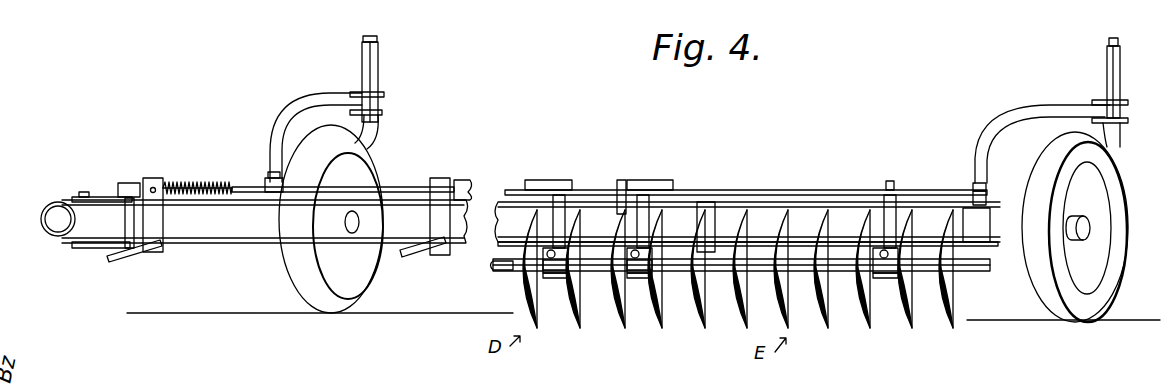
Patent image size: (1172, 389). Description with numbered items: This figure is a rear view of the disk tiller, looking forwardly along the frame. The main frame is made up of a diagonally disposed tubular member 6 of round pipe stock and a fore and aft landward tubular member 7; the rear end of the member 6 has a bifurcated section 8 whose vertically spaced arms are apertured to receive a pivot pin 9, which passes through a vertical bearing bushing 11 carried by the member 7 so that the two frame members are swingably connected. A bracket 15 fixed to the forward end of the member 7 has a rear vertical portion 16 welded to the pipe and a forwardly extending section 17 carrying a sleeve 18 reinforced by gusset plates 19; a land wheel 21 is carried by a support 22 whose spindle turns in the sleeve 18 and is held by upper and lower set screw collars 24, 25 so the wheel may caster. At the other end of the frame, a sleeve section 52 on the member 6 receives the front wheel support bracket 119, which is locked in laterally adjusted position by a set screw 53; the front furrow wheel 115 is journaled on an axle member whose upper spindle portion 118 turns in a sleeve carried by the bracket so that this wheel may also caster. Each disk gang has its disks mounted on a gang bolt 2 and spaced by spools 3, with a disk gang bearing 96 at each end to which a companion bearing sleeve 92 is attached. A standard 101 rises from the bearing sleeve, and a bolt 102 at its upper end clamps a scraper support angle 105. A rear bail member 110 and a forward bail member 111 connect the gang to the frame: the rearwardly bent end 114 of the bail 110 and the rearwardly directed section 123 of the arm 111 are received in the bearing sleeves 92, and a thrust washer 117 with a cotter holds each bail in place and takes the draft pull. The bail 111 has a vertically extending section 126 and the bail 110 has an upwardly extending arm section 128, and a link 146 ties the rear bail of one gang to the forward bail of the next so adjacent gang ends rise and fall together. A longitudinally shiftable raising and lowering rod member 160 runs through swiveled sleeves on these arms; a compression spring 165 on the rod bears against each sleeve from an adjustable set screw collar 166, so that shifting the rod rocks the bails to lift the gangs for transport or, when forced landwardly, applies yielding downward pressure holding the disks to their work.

The gang bolt 2 is at (492, 272).
The spools or spacers 3 is at (514, 271).
The diagonally disposed tubular member 6 is at (198, 243).
The fore and aft tubular member 7 is at (44, 212).
The bifurcated section 8 is at (98, 197).
The pivot pin 9 is at (84, 192).
The vertical bearing bushing 11 is at (75, 205).
The bracket 15 is at (278, 125).
The rear vertical portion 16 is at (266, 180).
The upper or forwardly extending section 17 is at (328, 93).
The sleeve 18 is at (378, 68).
The gusset plates 19 is at (384, 94).
The land wheel 21 is at (300, 275).
The support 22 is at (375, 140).
The upper set screw collar 24 is at (378, 44).
The lower set screw collar 25 is at (382, 112).
The sleeve section 52 is at (988, 185).
The set screw 53 is at (988, 198).
The companion bearing sleeve 92 is at (566, 266).
The disk gang bearing 96 is at (641, 287).
The standard 101 is at (555, 205).
The bolt 102 is at (556, 180).
The scraper support angle 105 is at (566, 190).
The rear bail member 110 is at (130, 262).
The forward bail member 111 is at (424, 257).
The rearwardly bent end 114 is at (652, 268).
The wheel 115 is at (1110, 172).
The thrust washer 117 is at (1114, 38).
The post 118 is at (1120, 82).
The wheel arm 119 is at (1020, 99).
The rearwardly directed section 123 is at (556, 276).
The vertically extending section 126 is at (430, 218).
The upwardly extending arm section 128 is at (170, 218).
The link 146 is at (466, 180).
The raising and lowering rod member 160 is at (402, 187).
The compression spring 165 is at (202, 182).
The adjustable set screw collar 166 is at (268, 176).